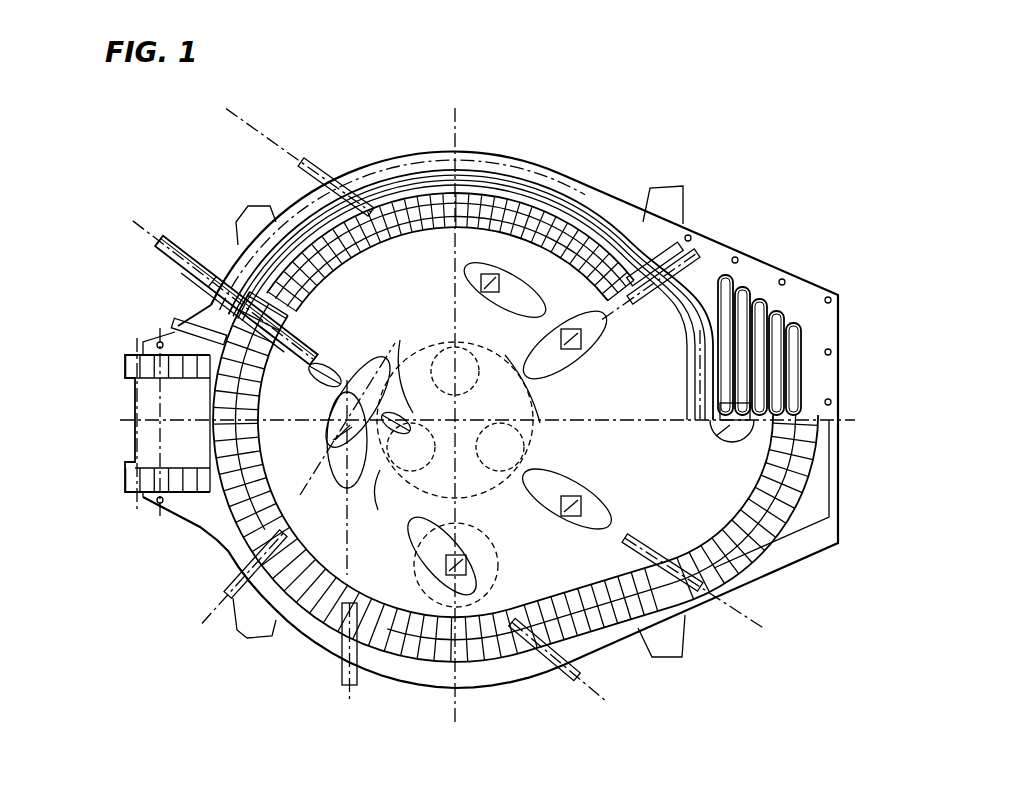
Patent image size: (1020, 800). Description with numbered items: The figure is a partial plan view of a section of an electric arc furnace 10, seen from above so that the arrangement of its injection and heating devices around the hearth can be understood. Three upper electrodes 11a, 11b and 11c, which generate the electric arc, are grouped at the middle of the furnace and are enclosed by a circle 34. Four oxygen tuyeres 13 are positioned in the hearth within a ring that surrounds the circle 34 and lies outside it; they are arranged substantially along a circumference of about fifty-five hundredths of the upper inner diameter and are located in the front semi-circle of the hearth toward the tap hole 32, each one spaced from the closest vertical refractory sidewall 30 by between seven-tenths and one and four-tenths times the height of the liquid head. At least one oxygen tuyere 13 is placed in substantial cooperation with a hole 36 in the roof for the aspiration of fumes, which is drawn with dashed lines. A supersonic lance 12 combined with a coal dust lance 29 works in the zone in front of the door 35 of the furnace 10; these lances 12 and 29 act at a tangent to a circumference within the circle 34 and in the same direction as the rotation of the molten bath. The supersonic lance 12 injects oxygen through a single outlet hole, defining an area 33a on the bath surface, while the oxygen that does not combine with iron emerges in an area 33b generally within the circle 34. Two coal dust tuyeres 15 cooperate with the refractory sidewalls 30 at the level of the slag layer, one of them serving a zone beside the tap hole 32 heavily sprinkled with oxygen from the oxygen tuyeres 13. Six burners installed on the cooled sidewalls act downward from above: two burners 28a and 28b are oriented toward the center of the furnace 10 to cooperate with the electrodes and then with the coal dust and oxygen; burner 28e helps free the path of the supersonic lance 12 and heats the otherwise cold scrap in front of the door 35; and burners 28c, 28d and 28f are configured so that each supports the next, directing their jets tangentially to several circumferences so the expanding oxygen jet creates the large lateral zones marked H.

The electric arc furnace 10 is at (825, 222).
The upper electrode 11a is at (522, 446).
The upper electrode 11b is at (447, 352).
The upper electrode 11c is at (405, 472).
The supersonic lance 12 is at (232, 273).
The oxygen tuyere 13 is at (565, 330).
The coal dust tuyere 15 is at (181, 322).
The burner 28a is at (700, 257).
The burner 28b is at (693, 597).
The burner 28c is at (558, 678).
The burner 28d is at (342, 678).
The burner 28e is at (227, 586).
The burner 28f is at (363, 193).
The coal dust lance 29 is at (182, 238).
The refractory sidewall 30 is at (593, 228).
The tap hole 32 is at (715, 433).
The area 33a is at (346, 362).
The area 33b is at (397, 397).
The circle 34 is at (494, 488).
The door 35 is at (196, 437).
The hole 36 is at (477, 598).